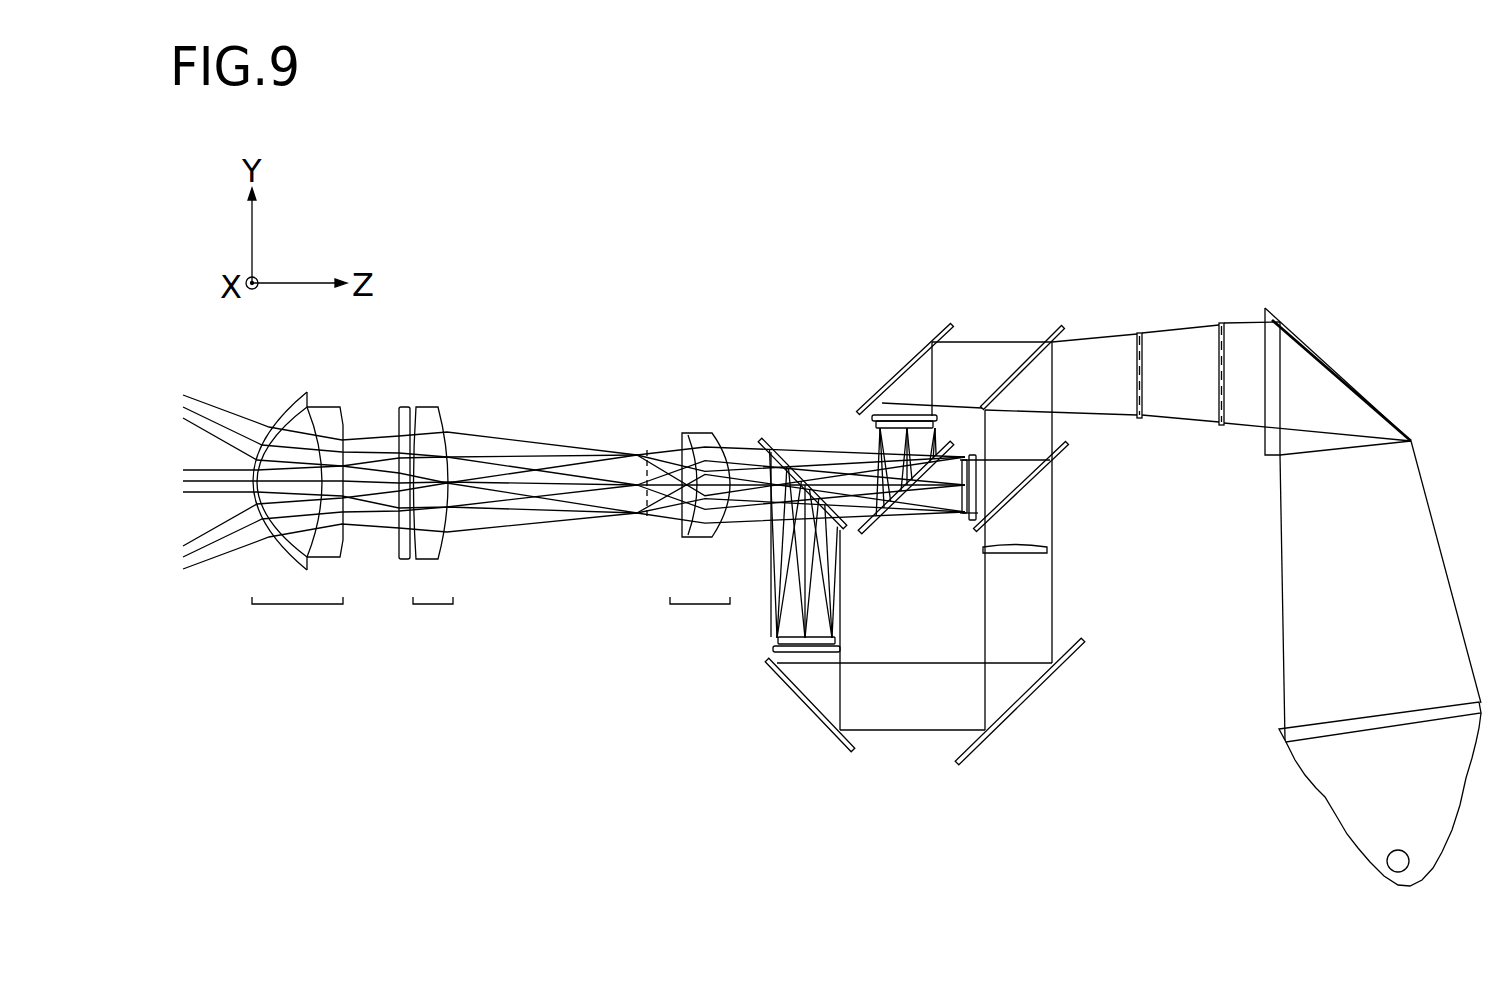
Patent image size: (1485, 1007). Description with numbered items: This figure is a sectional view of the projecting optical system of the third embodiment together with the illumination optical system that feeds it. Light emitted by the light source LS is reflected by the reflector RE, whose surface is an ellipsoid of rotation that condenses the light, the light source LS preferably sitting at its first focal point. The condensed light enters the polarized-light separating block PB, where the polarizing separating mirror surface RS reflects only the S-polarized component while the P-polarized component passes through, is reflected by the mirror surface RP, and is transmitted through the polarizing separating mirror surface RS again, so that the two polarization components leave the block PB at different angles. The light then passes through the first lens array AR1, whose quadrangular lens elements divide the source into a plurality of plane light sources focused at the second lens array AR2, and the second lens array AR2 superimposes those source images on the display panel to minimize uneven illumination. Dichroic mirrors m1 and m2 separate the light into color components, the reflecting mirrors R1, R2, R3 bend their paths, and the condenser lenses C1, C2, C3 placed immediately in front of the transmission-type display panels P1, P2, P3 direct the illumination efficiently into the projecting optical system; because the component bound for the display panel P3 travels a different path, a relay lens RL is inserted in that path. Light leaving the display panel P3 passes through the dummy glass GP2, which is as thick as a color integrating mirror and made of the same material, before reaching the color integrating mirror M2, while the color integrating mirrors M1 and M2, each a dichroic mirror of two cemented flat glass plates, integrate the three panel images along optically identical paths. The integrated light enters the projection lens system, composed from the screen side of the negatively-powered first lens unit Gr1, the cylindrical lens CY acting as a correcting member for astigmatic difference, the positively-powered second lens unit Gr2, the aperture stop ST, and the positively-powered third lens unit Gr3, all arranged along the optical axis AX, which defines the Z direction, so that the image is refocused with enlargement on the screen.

The optical axis AX is at (200, 480).
The first lens unit Gr1 is at (297, 524).
The second lens unit Gr2 is at (434, 531).
The third lens unit Gr3 is at (697, 544).
The cylindrical lens CY is at (400, 562).
The aperture stop ST is at (644, 523).
The color integrating mirror M1 is at (863, 535).
The color integrating mirror M2 is at (762, 437).
The display panel P1 is at (969, 521).
The display panel P2 is at (875, 424).
The display panel P3 is at (837, 637).
The condenser lens C1 is at (965, 516).
The condenser lens C2 is at (870, 413).
The condenser lens C3 is at (842, 648).
The dummy glass GP2 is at (770, 628).
The reflecting mirror R1 is at (940, 322).
The reflecting mirror R2 is at (1085, 654).
The reflecting mirror R3 is at (828, 723).
The dichroic mirror m1 is at (1057, 322).
The dichroic mirror m2 is at (1067, 448).
The relay lens RL is at (1047, 549).
The first lens array AR1 is at (1222, 323).
The second lens array AR2 is at (1140, 333).
The polarizing separating mirror surface RS is at (1293, 337).
The mirror surface RP is at (1312, 350).
The polarized-light separating block PB is at (1265, 447).
The reflector RE is at (1296, 775).
The light source LS is at (1388, 866).